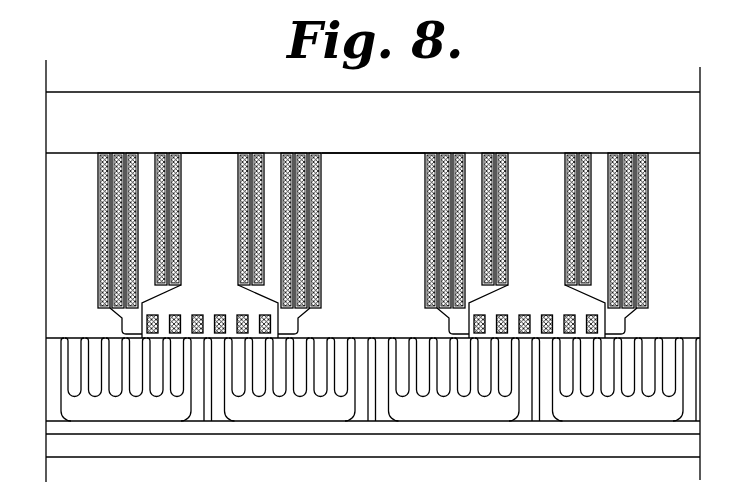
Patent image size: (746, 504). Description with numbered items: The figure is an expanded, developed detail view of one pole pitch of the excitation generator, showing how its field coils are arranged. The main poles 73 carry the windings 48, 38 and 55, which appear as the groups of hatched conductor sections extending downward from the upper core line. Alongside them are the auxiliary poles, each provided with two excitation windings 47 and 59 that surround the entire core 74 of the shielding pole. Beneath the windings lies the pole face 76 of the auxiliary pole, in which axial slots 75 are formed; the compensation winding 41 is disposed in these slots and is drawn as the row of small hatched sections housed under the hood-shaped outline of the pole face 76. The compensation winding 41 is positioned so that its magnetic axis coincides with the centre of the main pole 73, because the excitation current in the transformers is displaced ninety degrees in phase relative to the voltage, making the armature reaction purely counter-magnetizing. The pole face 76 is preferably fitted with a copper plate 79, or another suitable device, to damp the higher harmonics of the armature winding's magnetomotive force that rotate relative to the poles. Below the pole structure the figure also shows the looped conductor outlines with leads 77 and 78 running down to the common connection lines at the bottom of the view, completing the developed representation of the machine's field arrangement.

The winding 38 is at (302, 233).
The compensation winding 41 is at (152, 315).
The excitation winding 47 is at (178, 157).
The winding 48 is at (314, 215).
The winding 55 is at (288, 253).
The excitation winding 59 is at (159, 157).
The main pole 73 is at (369, 163).
The core of the shielding pole 74 is at (213, 163).
The axial slot 75 is at (198, 318).
The pole face 76 is at (260, 305).
The lead conductor 77 is at (382, 412).
The lead conductor 78 is at (545, 417).
The copper plate 79 is at (130, 331).